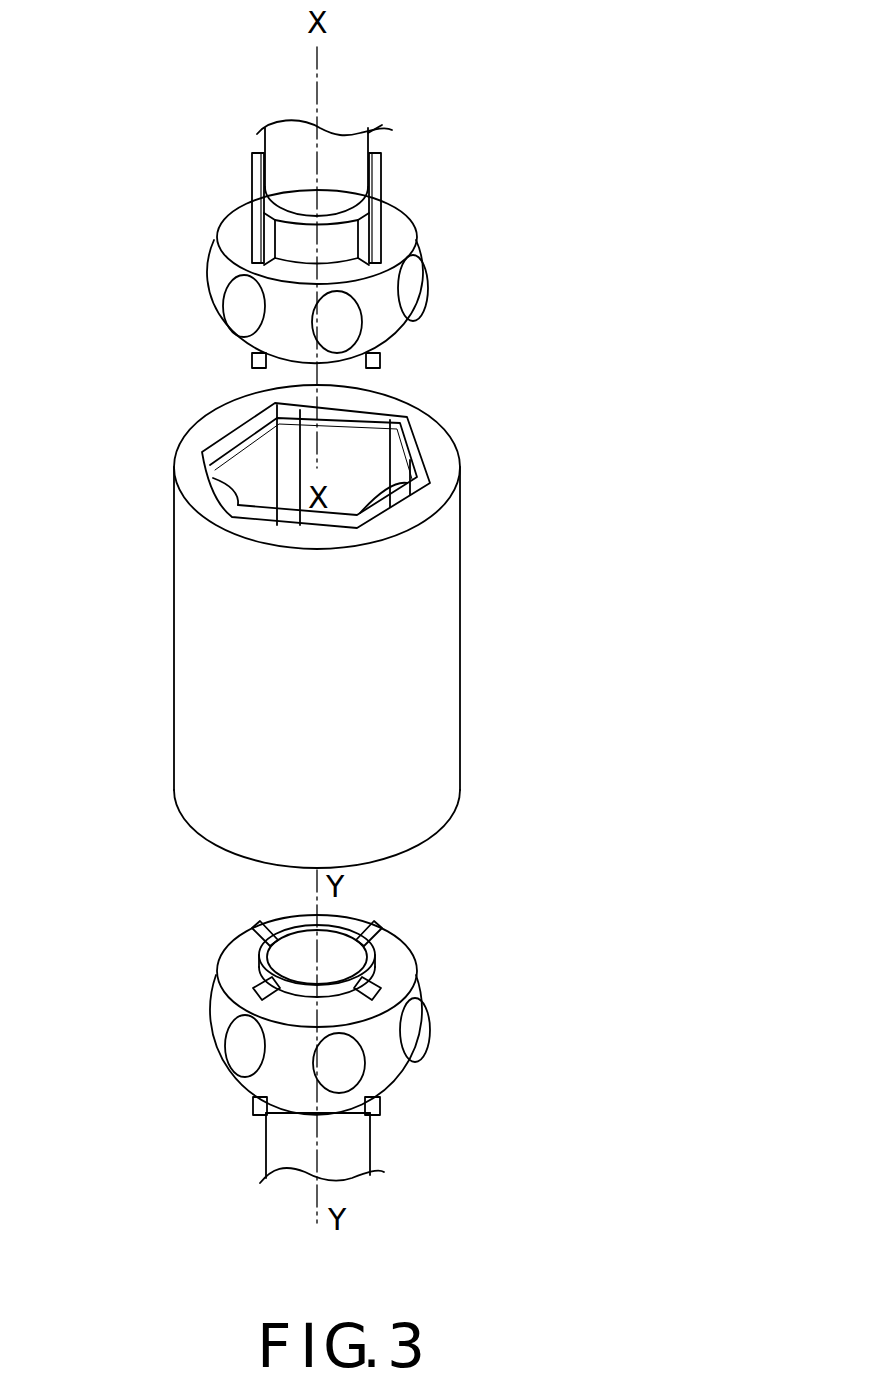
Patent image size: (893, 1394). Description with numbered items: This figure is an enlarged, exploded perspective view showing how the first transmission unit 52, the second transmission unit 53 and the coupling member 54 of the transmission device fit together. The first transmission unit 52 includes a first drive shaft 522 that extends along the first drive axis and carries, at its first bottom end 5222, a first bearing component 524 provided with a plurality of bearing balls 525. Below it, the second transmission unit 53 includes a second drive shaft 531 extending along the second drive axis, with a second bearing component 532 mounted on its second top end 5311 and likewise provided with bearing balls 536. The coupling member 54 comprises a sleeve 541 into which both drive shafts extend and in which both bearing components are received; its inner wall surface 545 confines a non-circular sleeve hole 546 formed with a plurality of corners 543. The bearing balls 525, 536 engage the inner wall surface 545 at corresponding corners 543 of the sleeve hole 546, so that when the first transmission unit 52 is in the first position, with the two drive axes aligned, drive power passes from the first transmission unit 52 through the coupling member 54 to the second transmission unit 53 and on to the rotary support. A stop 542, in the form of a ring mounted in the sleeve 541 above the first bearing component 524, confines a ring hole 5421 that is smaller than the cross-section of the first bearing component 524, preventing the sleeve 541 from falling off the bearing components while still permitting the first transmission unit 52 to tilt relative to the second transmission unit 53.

The first transmission unit 52 is at (250, 142).
The first drive shaft 522 is at (340, 157).
The first bottom end 5222 is at (370, 133).
The first bearing component 524 is at (378, 300).
The bearing balls 525 is at (233, 303).
The coupling member 54 is at (168, 540).
The sleeve 541 is at (413, 610).
The stop 542 is at (395, 438).
The ring hole 5421 is at (348, 443).
The corners 543 is at (217, 475).
The inner wall surface 545 is at (243, 457).
The sleeve hole 546 is at (413, 489).
The second transmission unit 53 is at (262, 1142).
The second drive shaft 531 is at (338, 1136).
The second top end 5311 is at (283, 1125).
The second bearing component 532 is at (383, 1020).
The bearing balls 536 is at (245, 1038).